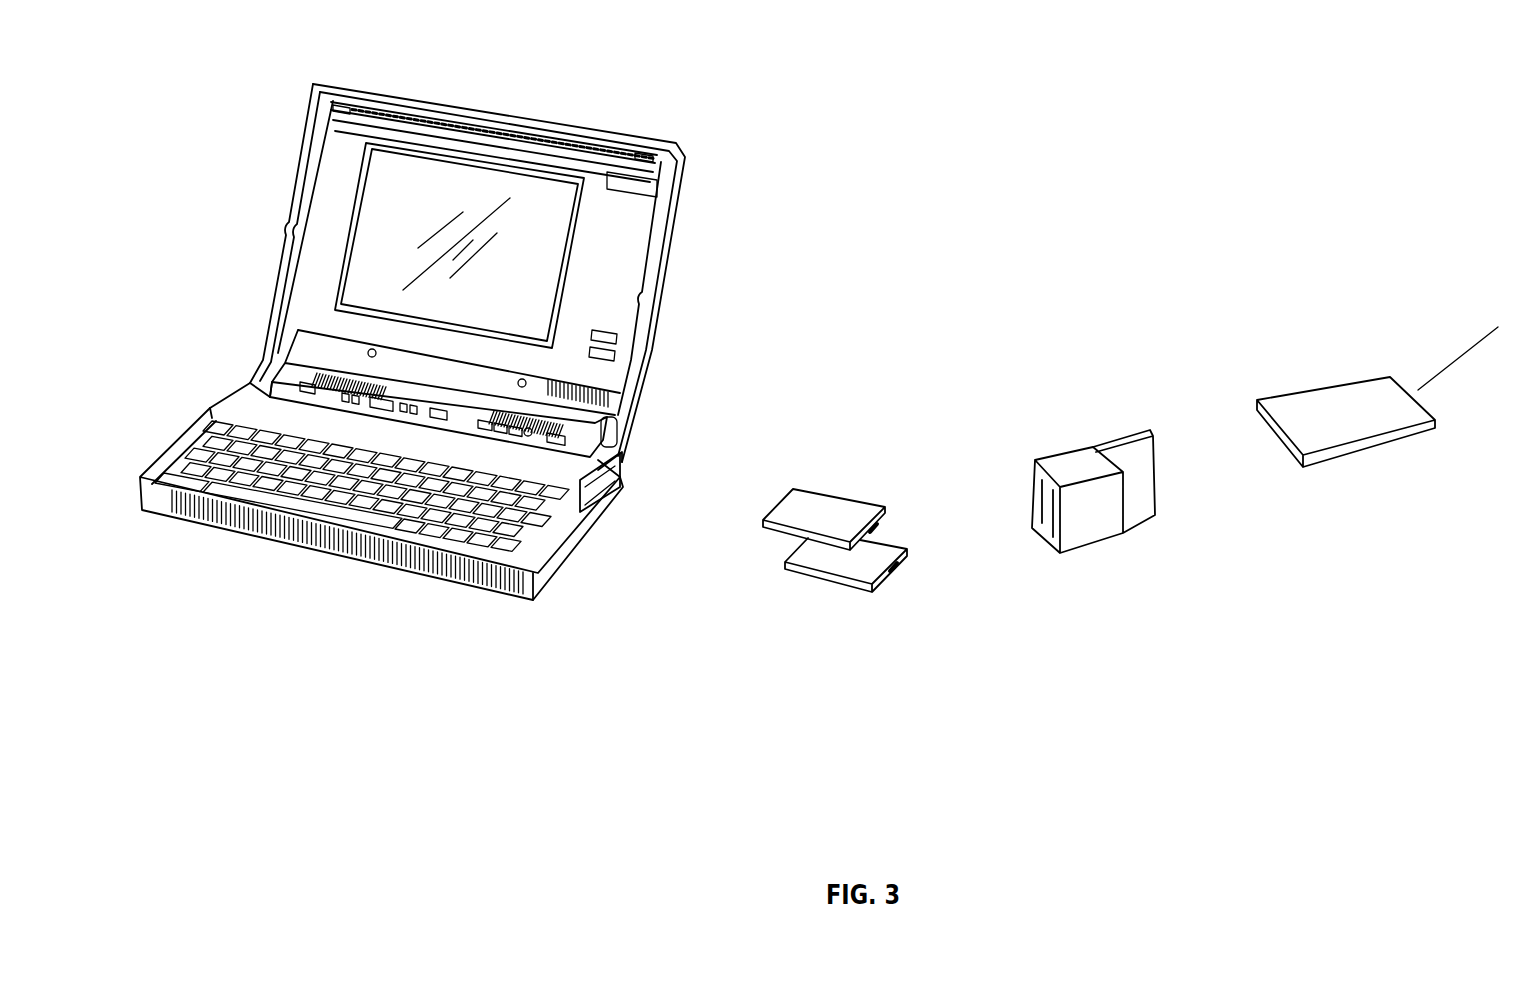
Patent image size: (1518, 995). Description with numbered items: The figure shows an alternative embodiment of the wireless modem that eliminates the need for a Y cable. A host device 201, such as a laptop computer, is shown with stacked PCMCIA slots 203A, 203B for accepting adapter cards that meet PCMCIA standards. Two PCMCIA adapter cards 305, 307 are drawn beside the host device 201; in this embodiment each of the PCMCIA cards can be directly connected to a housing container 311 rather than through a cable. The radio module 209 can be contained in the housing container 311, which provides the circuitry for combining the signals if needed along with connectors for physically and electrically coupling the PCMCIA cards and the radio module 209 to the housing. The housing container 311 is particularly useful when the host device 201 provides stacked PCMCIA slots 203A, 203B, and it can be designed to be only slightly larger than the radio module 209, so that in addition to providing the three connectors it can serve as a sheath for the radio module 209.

The host device 201 is at (685, 157).
The PCMCIA slot 203A is at (580, 500).
The PCMCIA slot 203B is at (617, 460).
The expansion card 305 is at (837, 498).
The expansion card 307 is at (827, 580).
The housing container 311 is at (1075, 447).
The radio module 209 is at (1342, 383).